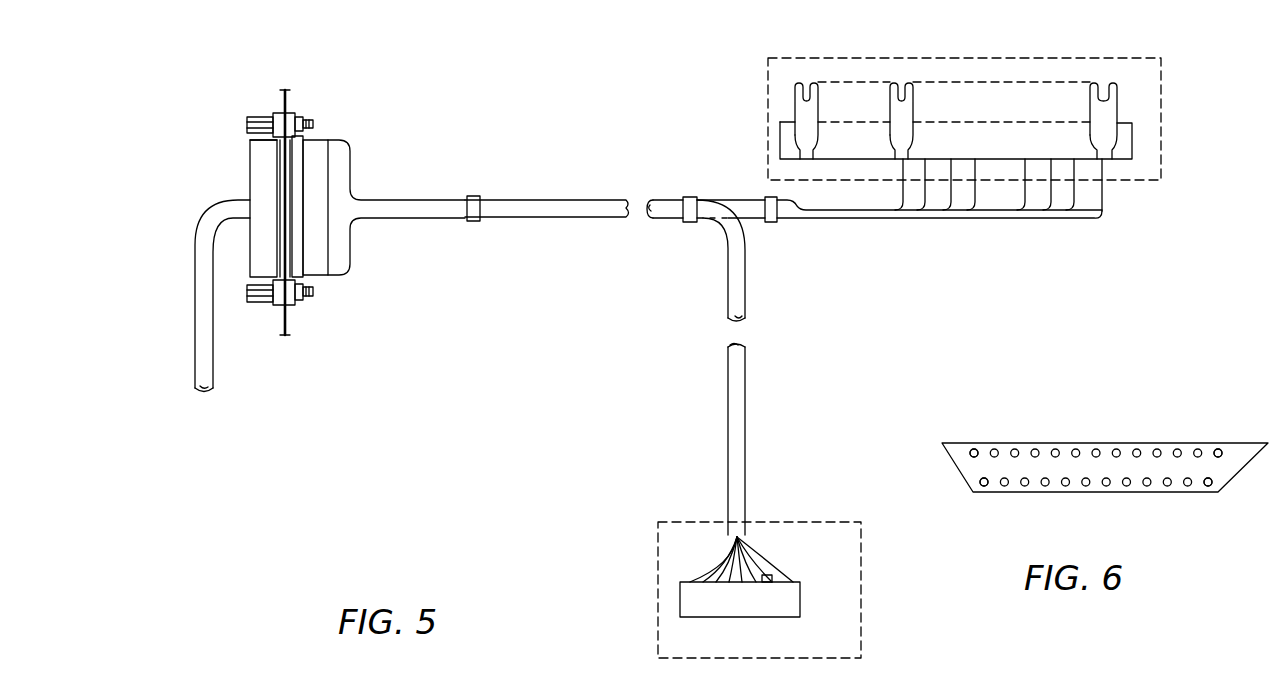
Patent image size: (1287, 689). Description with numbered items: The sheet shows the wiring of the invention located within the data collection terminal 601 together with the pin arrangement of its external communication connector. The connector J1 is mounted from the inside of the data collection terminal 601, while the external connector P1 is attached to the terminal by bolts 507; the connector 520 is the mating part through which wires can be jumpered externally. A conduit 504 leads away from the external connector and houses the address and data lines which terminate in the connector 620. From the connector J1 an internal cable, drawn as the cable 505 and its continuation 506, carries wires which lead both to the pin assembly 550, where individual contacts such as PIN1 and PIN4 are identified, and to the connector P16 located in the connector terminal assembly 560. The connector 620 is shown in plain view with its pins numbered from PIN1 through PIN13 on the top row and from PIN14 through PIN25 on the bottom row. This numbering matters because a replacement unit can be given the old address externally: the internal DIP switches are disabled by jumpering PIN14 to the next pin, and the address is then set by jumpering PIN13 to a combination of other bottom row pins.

In FIG. 5, the external connector P1 is at (250, 189).
In FIG. 5, the connector 520 is at (250, 170).
In FIG. 5, the bolts 507 is at (283, 113).
In FIG. 5, the connector J1 is at (352, 164).
In FIG. 5, the conduit 504 is at (213, 340).
In FIG. 5, the internal cable 505 is at (571, 218).
In FIG. 5, the data collection terminal 601 is at (559, 133).
In FIG. 5, the internal cable 506 is at (884, 215).
In FIG. 5, the pin assembly 550 is at (1076, 60).
In FIG. 5, the pin 1 PIN1 is at (818, 80).
In FIG. 6, the pin 1 PIN1 is at (1216, 448).
In FIG. 5, the pin 4 PIN4 is at (913, 80).
In FIG. 5, the connector terminal assembly 560 is at (829, 524).
In FIG. 5, the connector P16 is at (784, 617).
In FIG. 6, the connector 620 is at (1125, 443).
In FIG. 6, the pin 13 PIN13 is at (977, 448).
In FIG. 6, the pin 25 PIN25 is at (986, 487).
In FIG. 6, the pin 14 PIN14 is at (1207, 487).